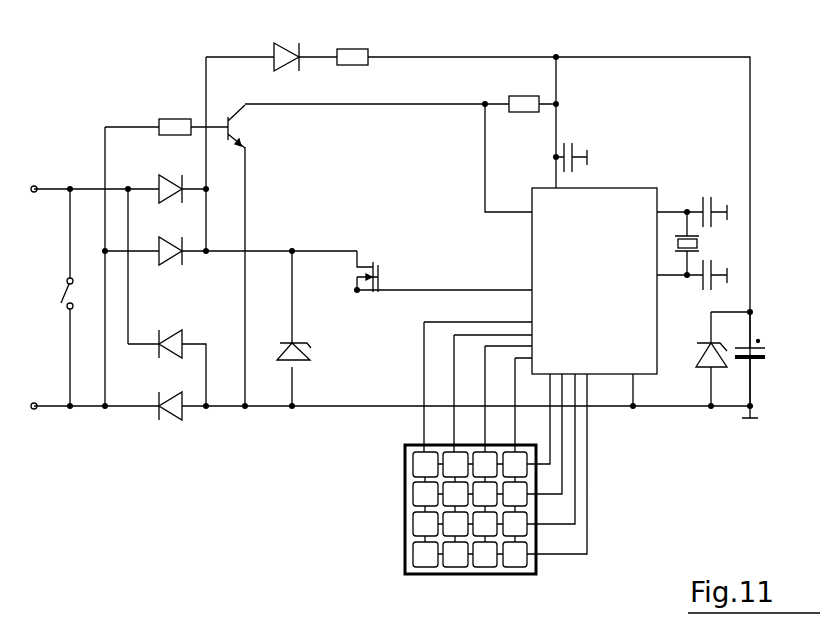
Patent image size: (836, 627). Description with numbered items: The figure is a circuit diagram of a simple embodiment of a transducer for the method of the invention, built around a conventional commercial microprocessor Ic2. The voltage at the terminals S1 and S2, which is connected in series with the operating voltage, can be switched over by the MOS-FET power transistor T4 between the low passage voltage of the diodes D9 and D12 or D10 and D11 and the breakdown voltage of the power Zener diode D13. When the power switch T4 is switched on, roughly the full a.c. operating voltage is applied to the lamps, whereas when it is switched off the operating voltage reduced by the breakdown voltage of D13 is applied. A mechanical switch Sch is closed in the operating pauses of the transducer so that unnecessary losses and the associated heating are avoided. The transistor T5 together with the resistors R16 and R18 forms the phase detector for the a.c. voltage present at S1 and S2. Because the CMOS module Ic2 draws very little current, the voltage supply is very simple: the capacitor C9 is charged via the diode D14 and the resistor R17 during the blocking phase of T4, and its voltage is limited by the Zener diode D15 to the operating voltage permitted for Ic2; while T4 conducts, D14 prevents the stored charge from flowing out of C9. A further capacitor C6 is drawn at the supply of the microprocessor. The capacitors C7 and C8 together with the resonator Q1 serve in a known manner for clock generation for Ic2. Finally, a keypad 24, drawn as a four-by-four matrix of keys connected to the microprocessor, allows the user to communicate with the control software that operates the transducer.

The terminal S1 is at (27, 175).
The terminal S2 is at (27, 393).
The mechanical switch Sch is at (47, 280).
The resistor R16 is at (166, 114).
The resistor R17 is at (348, 42).
The resistor R18 is at (516, 92).
The diode D9 is at (169, 398).
The diode D10 is at (174, 331).
The diode D11 is at (174, 239).
The diode D12 is at (174, 178).
The power Zener diode D13 is at (308, 336).
The diode D14 is at (283, 45).
The Zener diode D15 is at (698, 359).
The MOS-FET power transistor T4 is at (374, 259).
The transistor T5 is at (253, 126).
The capacitor C6 is at (575, 143).
The capacitor C7 is at (717, 197).
The capacitor C8 is at (721, 281).
The capacitor C9 is at (764, 359).
The resonator Q1 is at (705, 243).
The microprocessor Ic2 is at (594, 281).
The keypad 24 is at (446, 509).